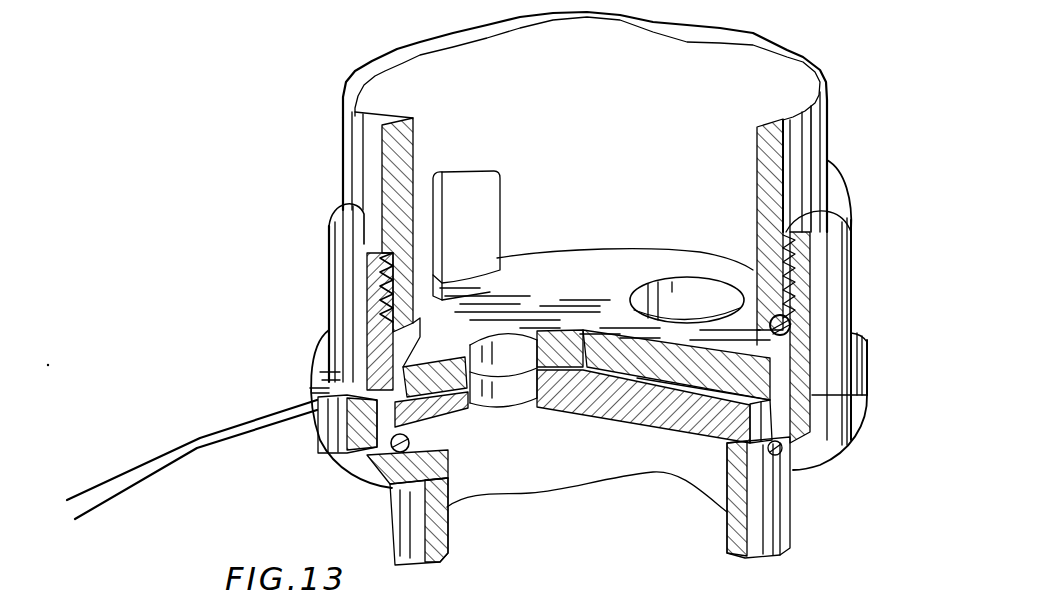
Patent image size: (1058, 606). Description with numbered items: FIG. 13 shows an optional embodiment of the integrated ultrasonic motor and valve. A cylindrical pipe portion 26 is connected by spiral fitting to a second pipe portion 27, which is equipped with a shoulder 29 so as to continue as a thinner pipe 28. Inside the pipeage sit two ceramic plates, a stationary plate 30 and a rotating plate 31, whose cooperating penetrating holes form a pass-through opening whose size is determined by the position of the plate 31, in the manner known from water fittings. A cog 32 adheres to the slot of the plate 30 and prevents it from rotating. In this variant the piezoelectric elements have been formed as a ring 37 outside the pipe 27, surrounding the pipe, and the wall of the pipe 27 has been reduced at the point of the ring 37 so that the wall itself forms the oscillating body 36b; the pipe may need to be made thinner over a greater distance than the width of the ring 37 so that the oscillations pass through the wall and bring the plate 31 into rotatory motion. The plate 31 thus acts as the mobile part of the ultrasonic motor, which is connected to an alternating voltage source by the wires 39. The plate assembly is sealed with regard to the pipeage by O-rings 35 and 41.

The cylindrical pipe portion 26 is at (813, 153).
The second pipe portion 27 is at (832, 283).
The thinner pipe 28 is at (780, 523).
The shoulder 29 is at (780, 470).
The stationary ceramic plate 30 is at (621, 262).
The rotating ceramic plate 31 is at (667, 417).
The cog 32 is at (483, 238).
The O-ring 35 is at (793, 327).
The oscillating body 36b is at (368, 460).
The ring of piezoelectric elements 37 is at (310, 396).
The wires 39 is at (228, 428).
The O-ring 41 is at (857, 373).